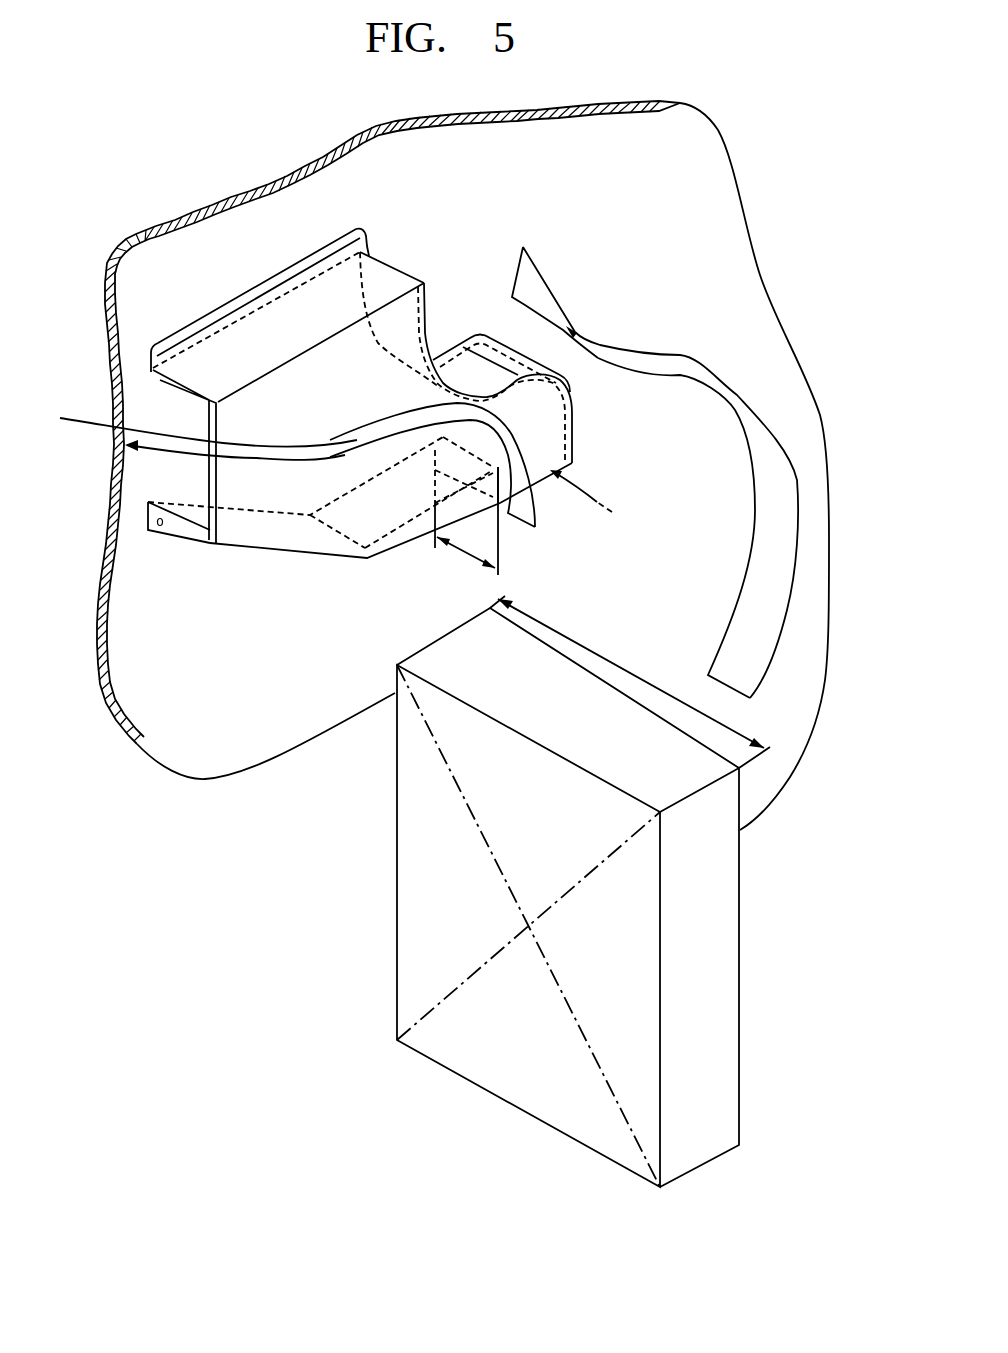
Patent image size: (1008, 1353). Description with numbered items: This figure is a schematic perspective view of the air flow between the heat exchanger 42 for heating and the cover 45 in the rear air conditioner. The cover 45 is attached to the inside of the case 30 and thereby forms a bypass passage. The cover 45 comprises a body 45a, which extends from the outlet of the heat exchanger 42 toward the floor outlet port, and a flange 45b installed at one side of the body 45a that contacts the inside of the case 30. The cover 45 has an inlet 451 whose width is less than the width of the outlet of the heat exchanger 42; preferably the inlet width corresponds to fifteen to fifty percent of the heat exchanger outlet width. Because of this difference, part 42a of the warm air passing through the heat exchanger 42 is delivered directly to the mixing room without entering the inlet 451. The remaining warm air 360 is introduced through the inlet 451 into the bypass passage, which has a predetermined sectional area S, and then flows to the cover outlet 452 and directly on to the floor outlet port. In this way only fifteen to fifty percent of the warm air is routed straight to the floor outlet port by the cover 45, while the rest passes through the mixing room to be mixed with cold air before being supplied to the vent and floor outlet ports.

The case 30 is at (195, 738).
The heat exchanger for heating 42 is at (733, 932).
The part of warm air 42a is at (780, 438).
The cover 45 is at (342, 359).
The body 45a is at (338, 302).
The flange 45b is at (233, 310).
The inlet 451 is at (541, 490).
The cover outlet 452 is at (165, 471).
The remaining warm air 360 is at (92, 433).
The sectional area S is at (590, 504).